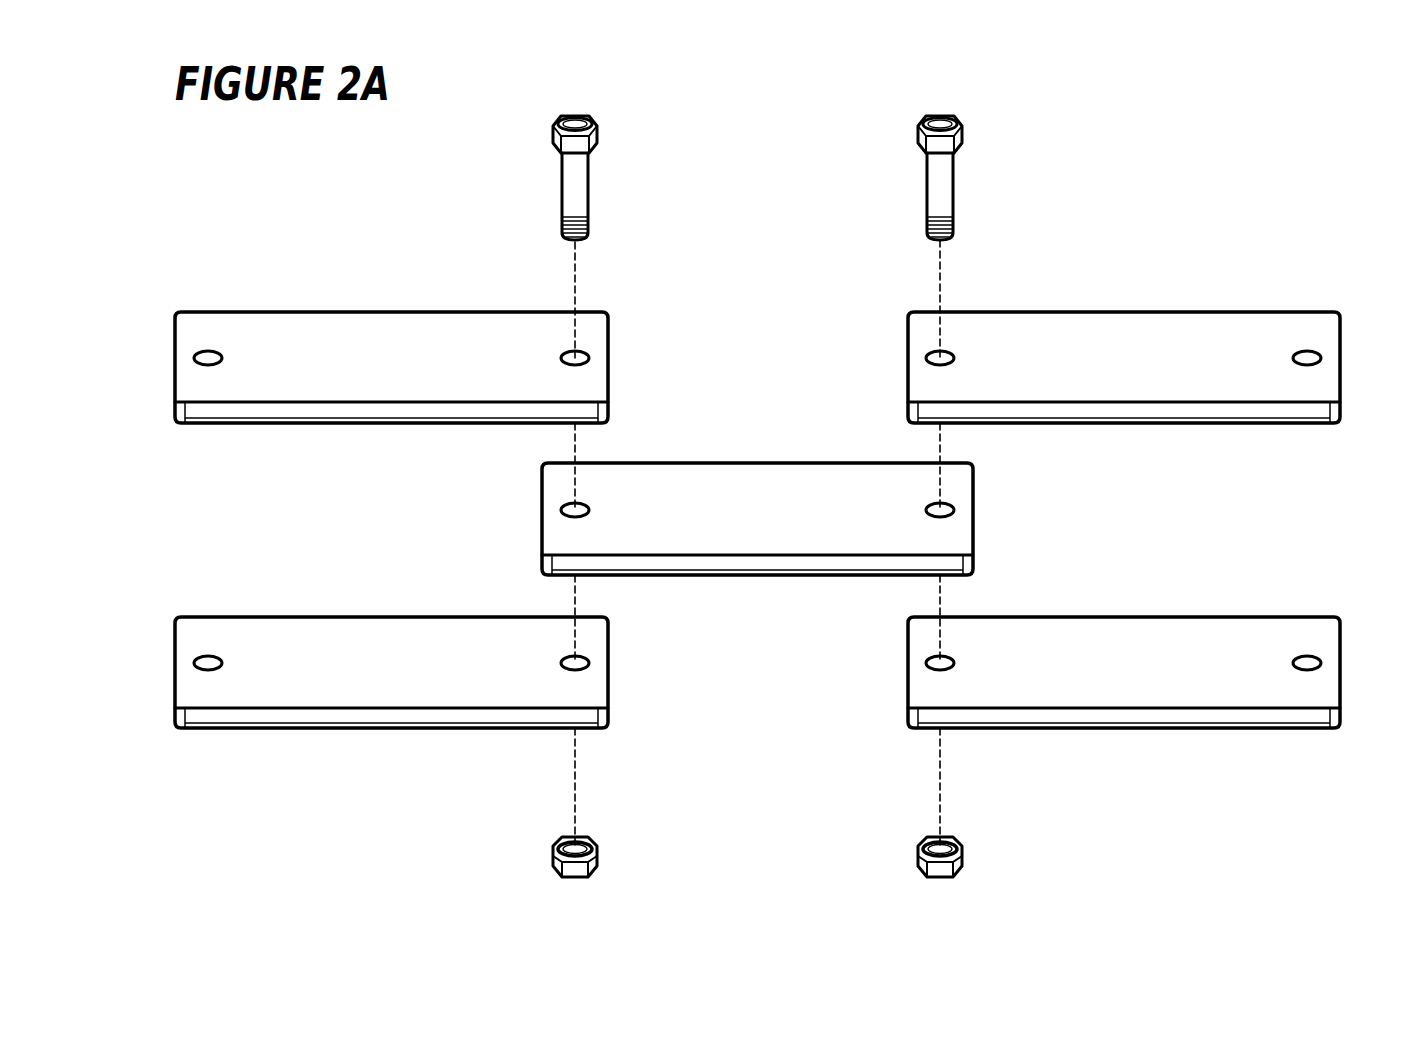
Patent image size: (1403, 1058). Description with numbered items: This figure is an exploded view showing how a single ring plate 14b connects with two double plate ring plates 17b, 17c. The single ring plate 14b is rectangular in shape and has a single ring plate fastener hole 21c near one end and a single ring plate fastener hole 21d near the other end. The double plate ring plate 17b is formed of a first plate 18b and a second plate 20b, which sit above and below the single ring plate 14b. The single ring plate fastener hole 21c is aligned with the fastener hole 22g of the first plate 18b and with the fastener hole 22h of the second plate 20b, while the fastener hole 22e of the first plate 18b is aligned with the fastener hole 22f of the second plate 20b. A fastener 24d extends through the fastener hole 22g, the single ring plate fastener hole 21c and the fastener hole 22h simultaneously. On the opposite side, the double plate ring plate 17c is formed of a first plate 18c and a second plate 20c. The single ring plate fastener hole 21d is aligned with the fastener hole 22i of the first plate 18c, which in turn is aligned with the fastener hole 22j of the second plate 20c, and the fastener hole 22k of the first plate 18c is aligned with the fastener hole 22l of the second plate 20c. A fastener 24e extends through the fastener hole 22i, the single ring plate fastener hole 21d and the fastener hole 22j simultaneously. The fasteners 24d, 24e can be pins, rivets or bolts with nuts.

The single ring plate 14b is at (757, 477).
The double plate ring plate 17b is at (1265, 238).
The double plate ring plate 17c is at (251, 238).
The first plate 18b is at (1123, 327).
The first plate 18c is at (391, 327).
The second plate 20b is at (1123, 635).
The second plate 20c is at (391, 635).
The single ring plate fastener hole 21c is at (949, 503).
The single ring plate fastener hole 21d is at (567, 503).
The fastener hole 22e is at (1315, 351).
The fastener hole 22f is at (1315, 656).
The fastener hole 22g is at (933, 351).
The fastener hole 22h is at (933, 656).
The fastener hole 22i is at (583, 351).
The fastener hole 22j is at (583, 656).
The fastener hole 22k is at (201, 351).
The fastener hole 22l is at (201, 656).
The fastener 24d is at (940, 121).
The fastener 24e is at (574, 121).